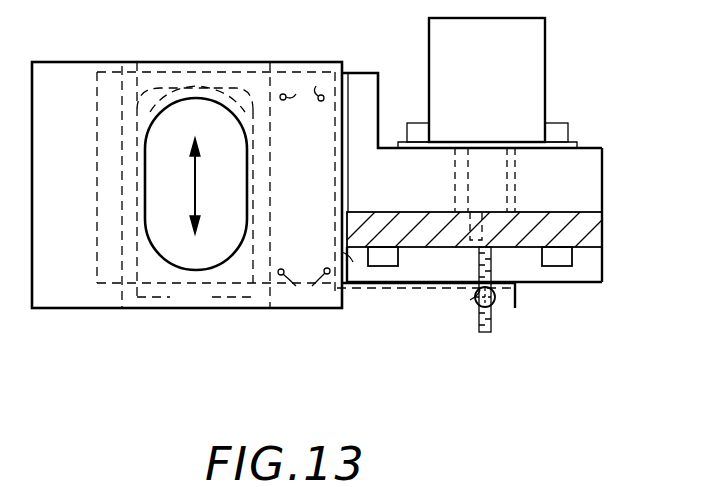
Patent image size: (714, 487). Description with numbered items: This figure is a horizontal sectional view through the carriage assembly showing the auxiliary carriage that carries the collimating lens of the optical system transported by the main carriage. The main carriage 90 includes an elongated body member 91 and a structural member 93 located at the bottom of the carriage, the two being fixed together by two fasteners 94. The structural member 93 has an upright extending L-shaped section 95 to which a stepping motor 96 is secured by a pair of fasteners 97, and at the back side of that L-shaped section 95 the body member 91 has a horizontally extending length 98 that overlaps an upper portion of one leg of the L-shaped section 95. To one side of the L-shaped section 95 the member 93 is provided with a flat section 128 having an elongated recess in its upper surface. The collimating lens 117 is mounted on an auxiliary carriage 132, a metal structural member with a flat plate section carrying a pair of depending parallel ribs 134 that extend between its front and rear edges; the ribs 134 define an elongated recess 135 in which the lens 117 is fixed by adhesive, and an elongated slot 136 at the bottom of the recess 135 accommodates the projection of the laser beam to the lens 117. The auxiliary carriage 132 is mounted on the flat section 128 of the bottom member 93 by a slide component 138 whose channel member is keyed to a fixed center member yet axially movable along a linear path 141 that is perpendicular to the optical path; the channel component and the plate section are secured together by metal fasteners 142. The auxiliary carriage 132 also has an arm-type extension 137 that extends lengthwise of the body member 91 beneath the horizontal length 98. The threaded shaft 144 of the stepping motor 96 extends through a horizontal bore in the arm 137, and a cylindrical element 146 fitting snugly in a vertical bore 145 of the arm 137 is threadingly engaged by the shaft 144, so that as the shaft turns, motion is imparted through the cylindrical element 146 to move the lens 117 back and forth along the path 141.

The carriage 90 is at (604, 252).
The body member 91 is at (604, 224).
The structural member 93 is at (95, 283).
The fasteners 94 is at (398, 266).
The L-shaped section 95 is at (380, 115).
The stepping motor 96 is at (546, 60).
The fasteners 97 is at (418, 122).
The horizontally extending length 98 is at (345, 261).
The collimating lens 117 is at (170, 92).
The flat section 128 is at (97, 88).
The auxiliary carriage 132 is at (65, 62).
The ribs 134 is at (196, 297).
The elongated recess 135 is at (253, 82).
The elongated slot 136 is at (242, 133).
The arm-type extension 137 is at (372, 316).
The slide component 138 is at (357, 85).
The linear path 141 is at (207, 173).
The metal fasteners 142 is at (304, 191).
The threaded shaft 144 is at (492, 332).
The vertical bore 145 is at (476, 298).
The cylindrical element 146 is at (496, 300).